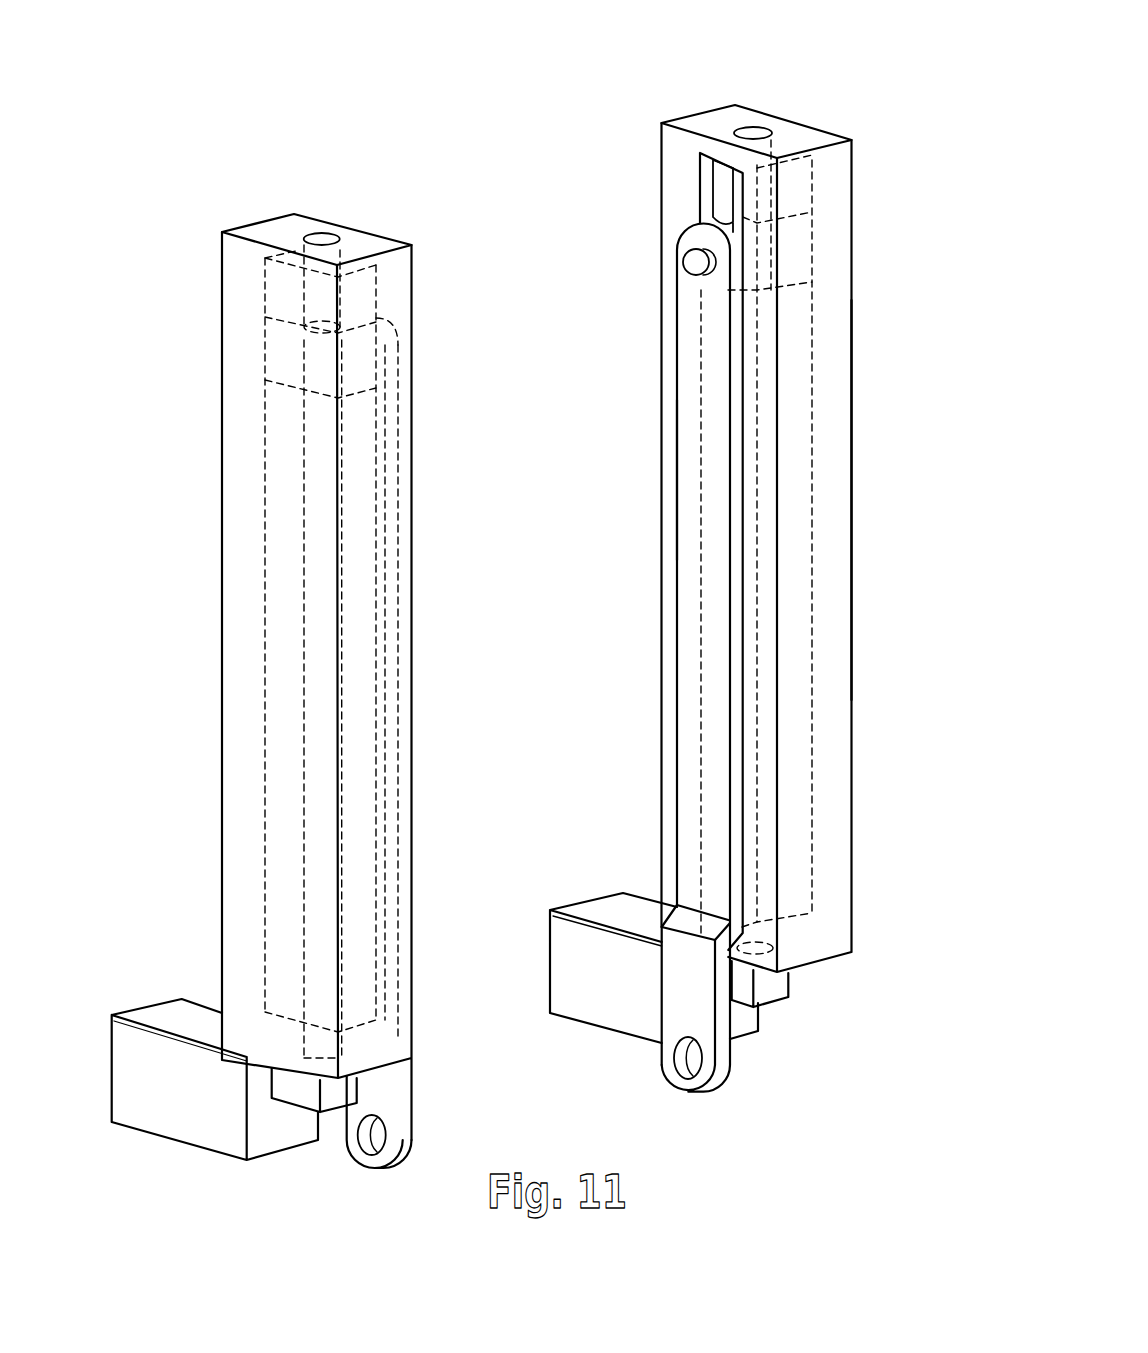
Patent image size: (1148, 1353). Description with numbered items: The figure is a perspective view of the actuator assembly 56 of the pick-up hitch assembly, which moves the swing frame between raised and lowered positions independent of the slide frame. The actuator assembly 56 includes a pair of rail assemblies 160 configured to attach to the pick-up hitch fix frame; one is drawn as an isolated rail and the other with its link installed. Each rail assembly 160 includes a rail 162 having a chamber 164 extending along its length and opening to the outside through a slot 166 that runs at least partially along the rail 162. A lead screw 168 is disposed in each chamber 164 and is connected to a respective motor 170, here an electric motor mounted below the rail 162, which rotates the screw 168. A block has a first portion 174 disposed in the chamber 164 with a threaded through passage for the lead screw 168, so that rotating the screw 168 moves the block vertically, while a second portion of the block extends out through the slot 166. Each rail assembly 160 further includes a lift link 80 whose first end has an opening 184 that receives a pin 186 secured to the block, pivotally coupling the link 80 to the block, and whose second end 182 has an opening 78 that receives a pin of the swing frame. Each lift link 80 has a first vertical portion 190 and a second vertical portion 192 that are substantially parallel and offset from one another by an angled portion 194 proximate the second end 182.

The actuator assembly 56 is at (838, 72).
The rail assembly 160 is at (158, 270).
The rail 162 is at (833, 515).
The chamber 164 is at (767, 378).
The slot 166 is at (703, 182).
The lead screw 168 is at (725, 190).
The first portion 174 is at (293, 360).
The opening 184 is at (697, 233).
The pin 186 is at (695, 262).
The first vertical portion 190 is at (715, 482).
The lift link 80 is at (710, 642).
The angled portion 194 is at (682, 915).
The second vertical portion 192 is at (675, 1000).
The second end 182 is at (717, 1082).
The opening 78 is at (688, 1057).
The motor 170 is at (595, 1017).